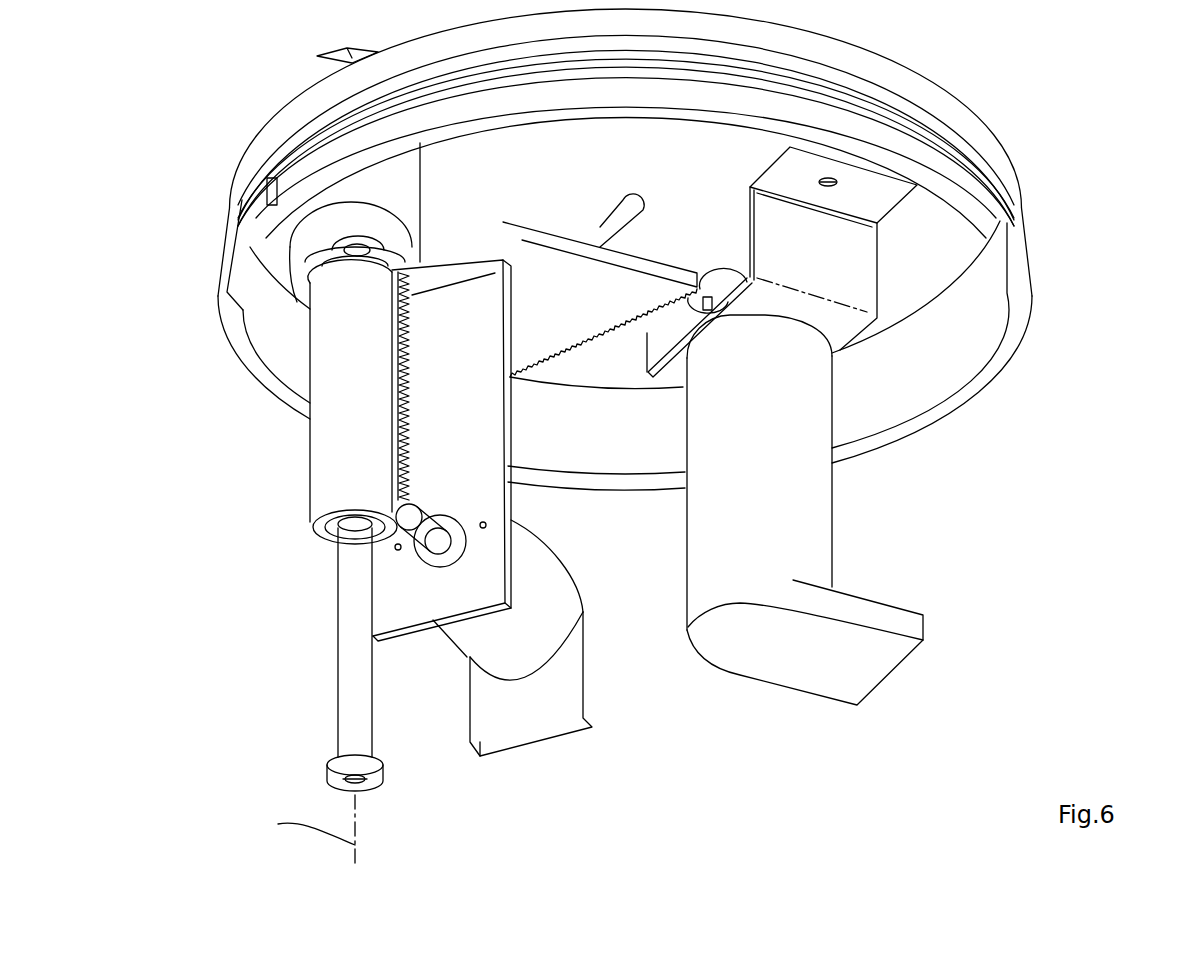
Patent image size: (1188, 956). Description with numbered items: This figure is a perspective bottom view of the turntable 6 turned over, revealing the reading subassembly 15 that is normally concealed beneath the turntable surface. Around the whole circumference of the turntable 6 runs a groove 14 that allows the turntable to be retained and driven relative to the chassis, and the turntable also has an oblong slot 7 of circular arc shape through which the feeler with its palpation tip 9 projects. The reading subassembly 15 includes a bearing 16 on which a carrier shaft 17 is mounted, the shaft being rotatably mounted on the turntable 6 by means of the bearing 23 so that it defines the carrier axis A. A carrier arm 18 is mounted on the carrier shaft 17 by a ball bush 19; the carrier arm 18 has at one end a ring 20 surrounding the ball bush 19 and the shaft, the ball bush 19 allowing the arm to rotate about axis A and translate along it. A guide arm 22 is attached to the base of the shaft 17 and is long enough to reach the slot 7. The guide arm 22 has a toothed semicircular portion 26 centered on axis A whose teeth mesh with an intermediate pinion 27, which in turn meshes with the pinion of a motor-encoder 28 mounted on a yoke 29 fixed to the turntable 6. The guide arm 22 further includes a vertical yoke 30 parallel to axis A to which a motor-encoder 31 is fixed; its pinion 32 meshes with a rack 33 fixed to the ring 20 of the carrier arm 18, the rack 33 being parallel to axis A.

The turntable 6 is at (272, 318).
The oblong slot 7 is at (623, 207).
The palpation tip 9 is at (318, 60).
The groove 14 is at (985, 163).
The reading subassembly 15 is at (283, 480).
The bearing 16 is at (300, 232).
The carrier shaft 17 is at (350, 650).
The carrier arm 18 is at (330, 447).
The ball bush 19 is at (330, 527).
The ring 20 is at (290, 391).
The guide arm 22 is at (427, 263).
The bearing 23 is at (360, 247).
The toothed semicircular portion 26 is at (588, 337).
The intermediate pinion 27 is at (713, 277).
The motor-encoder 28 is at (802, 675).
The yoke 29 is at (853, 253).
The vertical yoke 30 is at (400, 603).
The motor-encoder 31 is at (520, 710).
The pinion 32 is at (413, 505).
The rack 33 is at (410, 353).